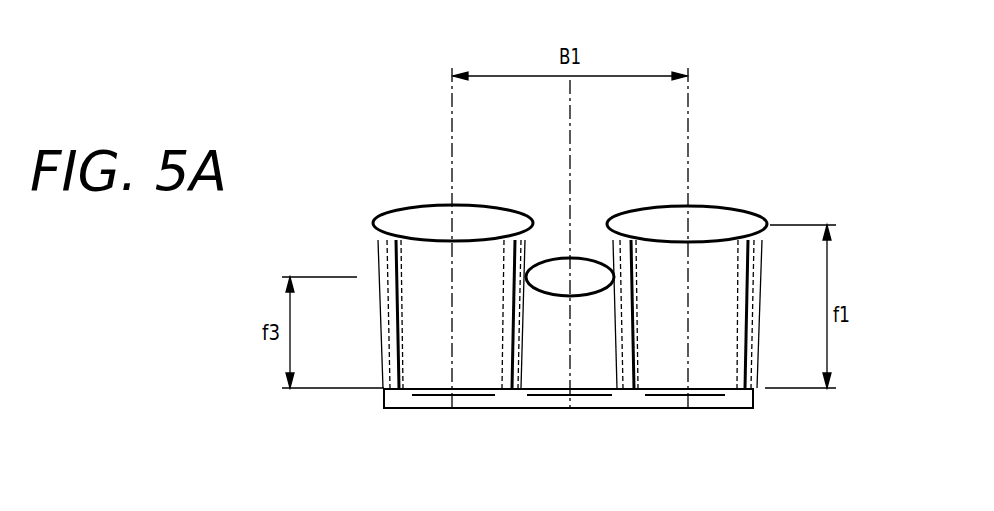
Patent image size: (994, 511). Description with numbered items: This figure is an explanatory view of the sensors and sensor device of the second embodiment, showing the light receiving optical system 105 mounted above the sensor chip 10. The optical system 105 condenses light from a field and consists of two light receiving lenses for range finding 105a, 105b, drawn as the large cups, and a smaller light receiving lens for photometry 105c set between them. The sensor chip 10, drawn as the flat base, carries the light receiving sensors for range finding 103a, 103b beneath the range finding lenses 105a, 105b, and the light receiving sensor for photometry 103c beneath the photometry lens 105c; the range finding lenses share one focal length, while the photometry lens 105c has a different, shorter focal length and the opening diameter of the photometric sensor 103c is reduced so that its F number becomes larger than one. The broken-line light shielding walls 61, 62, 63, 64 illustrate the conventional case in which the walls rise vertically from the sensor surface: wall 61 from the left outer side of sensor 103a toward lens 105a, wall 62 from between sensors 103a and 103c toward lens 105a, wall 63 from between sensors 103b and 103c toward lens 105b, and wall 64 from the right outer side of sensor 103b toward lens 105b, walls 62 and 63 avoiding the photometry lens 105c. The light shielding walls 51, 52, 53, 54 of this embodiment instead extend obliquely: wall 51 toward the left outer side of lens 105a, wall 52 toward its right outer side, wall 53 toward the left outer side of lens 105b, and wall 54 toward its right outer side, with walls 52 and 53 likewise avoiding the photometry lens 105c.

The light receiving optical system 105 is at (350, 158).
The light receiving lens for range finding 105a is at (722, 206).
The light receiving lens for range finding 105b is at (423, 206).
The light receiving lens for photometry 105c is at (546, 258).
The light shielding wall 51 is at (755, 336).
The light shielding wall 52 is at (615, 330).
The light shielding wall 53 is at (522, 330).
The light shielding wall 54 is at (381, 340).
The light shielding wall 61 is at (736, 293).
The light shielding wall 62 is at (636, 293).
The light shielding wall 63 is at (506, 293).
The light shielding wall 64 is at (400, 293).
The sensor chip 10 is at (718, 409).
The light receiving sensor for range finding 103a is at (677, 395).
The light receiving sensor for range finding 103b is at (433, 395).
The light receiving sensor for photometry 103c is at (557, 395).